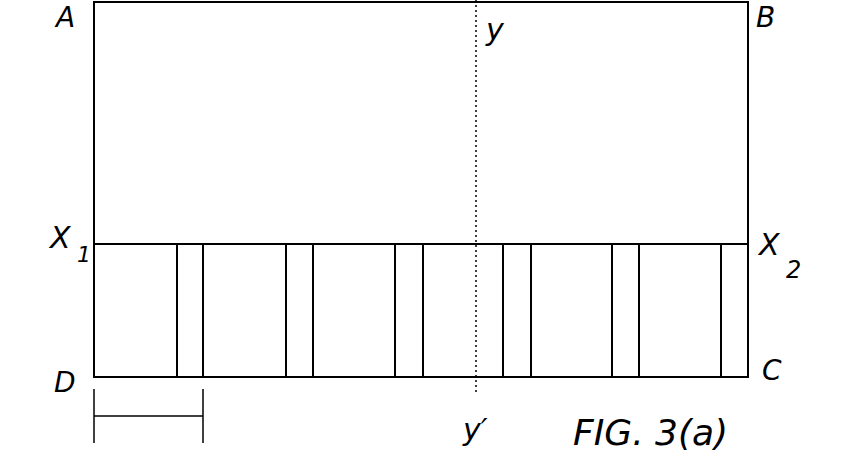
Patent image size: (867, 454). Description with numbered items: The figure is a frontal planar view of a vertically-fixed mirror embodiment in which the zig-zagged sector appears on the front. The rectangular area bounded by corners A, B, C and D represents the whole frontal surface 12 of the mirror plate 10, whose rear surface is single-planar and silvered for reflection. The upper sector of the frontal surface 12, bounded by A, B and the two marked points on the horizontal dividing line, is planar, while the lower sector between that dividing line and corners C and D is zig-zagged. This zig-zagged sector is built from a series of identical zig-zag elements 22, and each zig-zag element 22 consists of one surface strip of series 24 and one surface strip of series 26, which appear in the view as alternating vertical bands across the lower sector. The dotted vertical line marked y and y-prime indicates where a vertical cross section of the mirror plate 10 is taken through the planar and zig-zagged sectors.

The mirror plate 10 is at (481, 216).
The frontal surface 12 is at (170, 80).
The zig-zag element 22 is at (148, 411).
The surface strip 24 is at (233, 347).
The surface strip 26 is at (300, 329).